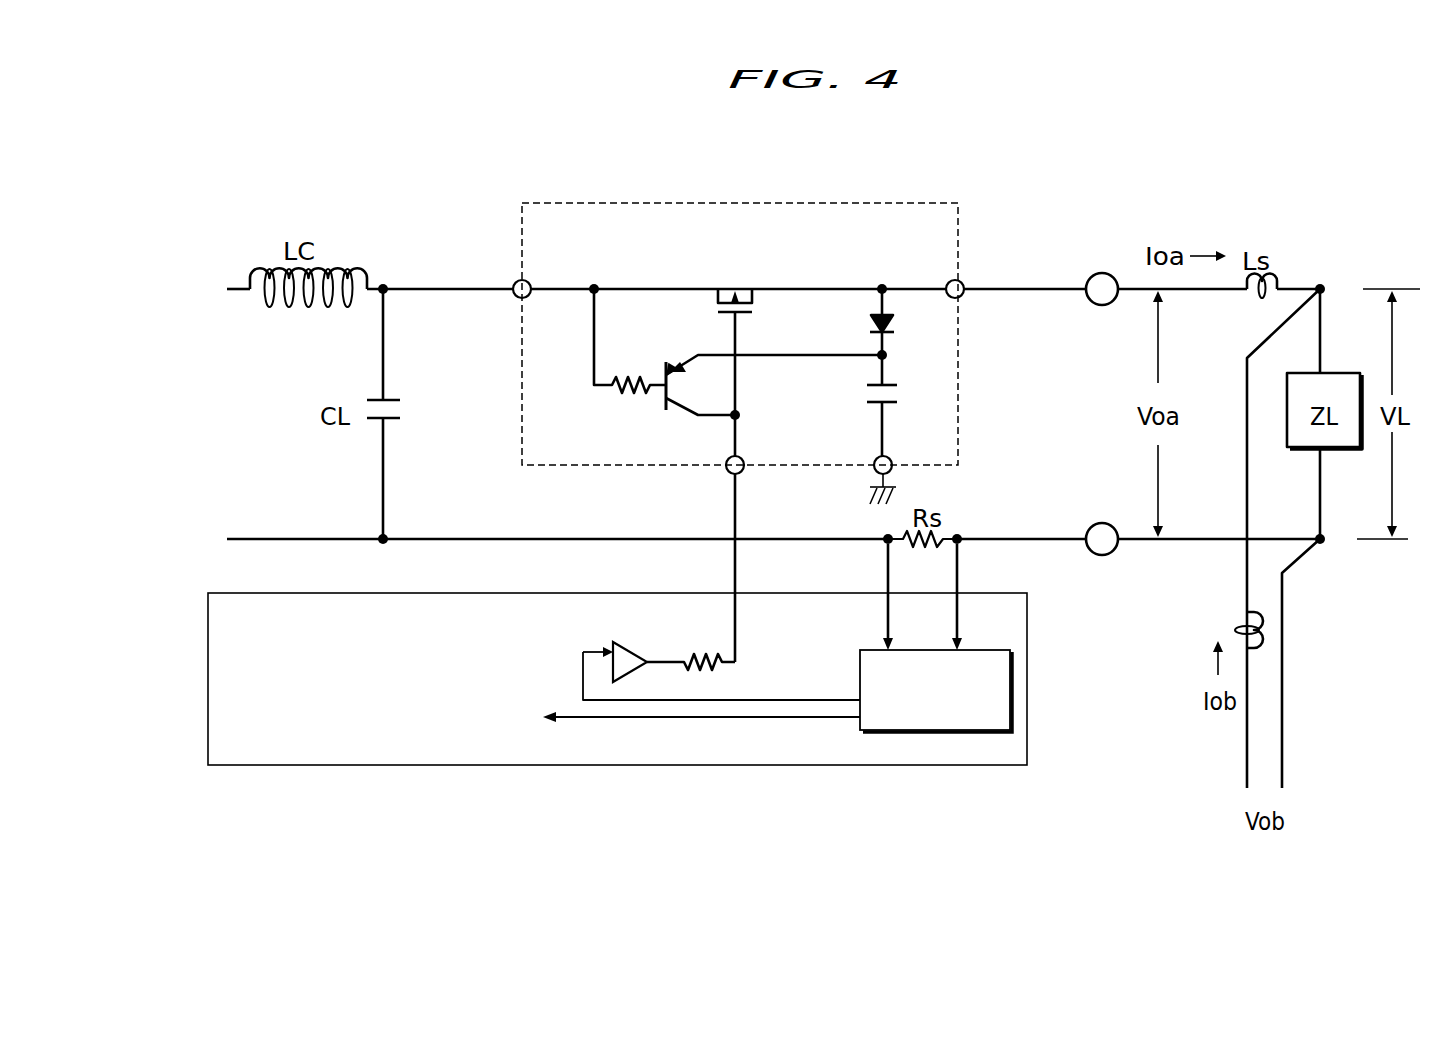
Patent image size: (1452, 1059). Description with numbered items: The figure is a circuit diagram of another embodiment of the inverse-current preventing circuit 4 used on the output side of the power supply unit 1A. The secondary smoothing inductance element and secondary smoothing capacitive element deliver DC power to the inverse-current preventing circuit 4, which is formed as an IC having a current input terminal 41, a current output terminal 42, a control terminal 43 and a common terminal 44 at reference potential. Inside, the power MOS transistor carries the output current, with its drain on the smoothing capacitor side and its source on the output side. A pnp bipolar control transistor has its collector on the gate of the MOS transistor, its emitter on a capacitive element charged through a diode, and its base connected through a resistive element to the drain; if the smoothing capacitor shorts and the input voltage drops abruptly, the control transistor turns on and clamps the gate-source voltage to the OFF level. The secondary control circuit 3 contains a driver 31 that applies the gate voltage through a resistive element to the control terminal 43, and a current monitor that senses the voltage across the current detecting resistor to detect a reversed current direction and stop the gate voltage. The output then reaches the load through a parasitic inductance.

The inverse-current preventing circuit 4 is at (873, 203).
The current input terminal 41 is at (516, 282).
The current output terminal 42 is at (963, 283).
The control terminal 43 is at (727, 472).
The common terminal 44 is at (873, 471).
The power supply unit 1A is at (580, 522).
The secondary control circuit 3 is at (617, 730).
The driver 31 is at (631, 648).